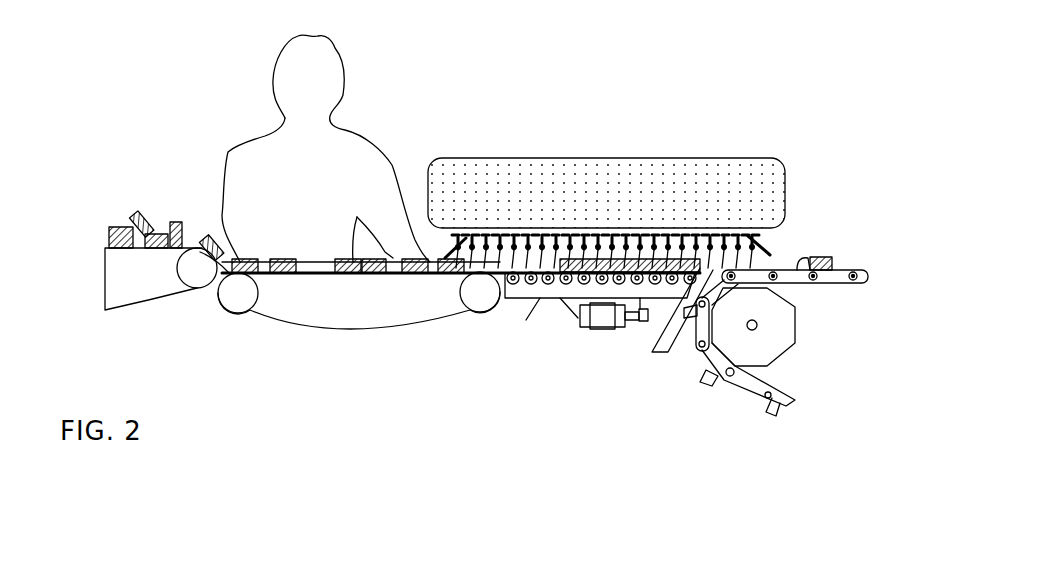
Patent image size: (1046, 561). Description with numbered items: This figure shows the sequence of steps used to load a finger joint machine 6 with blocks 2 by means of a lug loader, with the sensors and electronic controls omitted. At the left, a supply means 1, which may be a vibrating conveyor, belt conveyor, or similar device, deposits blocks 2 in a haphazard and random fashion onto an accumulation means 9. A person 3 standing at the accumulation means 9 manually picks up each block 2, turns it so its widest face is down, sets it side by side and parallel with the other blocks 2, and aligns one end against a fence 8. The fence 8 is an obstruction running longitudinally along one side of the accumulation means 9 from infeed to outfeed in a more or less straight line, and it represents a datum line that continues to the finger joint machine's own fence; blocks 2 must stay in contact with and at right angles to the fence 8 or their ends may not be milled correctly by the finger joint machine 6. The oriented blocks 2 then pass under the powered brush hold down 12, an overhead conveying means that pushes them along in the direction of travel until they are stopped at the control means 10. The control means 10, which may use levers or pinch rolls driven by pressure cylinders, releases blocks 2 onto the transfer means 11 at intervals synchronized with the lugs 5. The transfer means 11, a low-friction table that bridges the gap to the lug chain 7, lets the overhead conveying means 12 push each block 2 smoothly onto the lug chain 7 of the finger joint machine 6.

The supply means 1 is at (131, 290).
The blocks 2 is at (135, 214).
The person 3 is at (305, 193).
The lugs 5 is at (708, 384).
The finger joint machine 6 is at (846, 360).
The lug chain 7 is at (855, 267).
The fence 8 is at (313, 262).
The accumulation means 9 is at (356, 320).
The control means 10 is at (687, 285).
The transfer means 11 is at (660, 352).
The powered brush hold down 12 is at (603, 152).